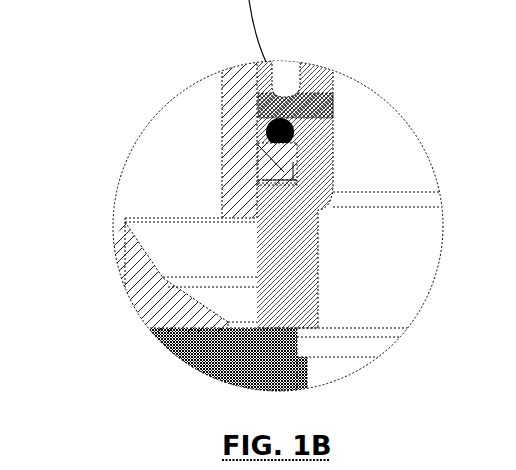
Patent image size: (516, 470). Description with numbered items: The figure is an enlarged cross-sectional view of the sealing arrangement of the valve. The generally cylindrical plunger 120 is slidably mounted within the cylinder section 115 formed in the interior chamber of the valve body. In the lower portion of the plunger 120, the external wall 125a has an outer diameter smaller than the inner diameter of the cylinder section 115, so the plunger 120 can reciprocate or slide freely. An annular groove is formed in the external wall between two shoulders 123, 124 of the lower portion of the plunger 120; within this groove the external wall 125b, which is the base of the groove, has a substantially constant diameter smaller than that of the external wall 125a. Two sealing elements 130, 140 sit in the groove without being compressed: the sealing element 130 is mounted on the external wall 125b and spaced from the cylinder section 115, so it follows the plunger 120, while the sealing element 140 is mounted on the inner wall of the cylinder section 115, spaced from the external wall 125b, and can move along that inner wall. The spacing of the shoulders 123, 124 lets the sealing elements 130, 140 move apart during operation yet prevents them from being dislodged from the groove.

The cylinder section 115 is at (230, 138).
The valve mechanism plunger 120 is at (315, 74).
The shoulder 123 is at (280, 97).
The shoulder 124 is at (434, 337).
The external wall 125a is at (262, 246).
The external wall 125b is at (295, 179).
The sealing element 130 is at (295, 130).
The sealing element 140 is at (282, 167).